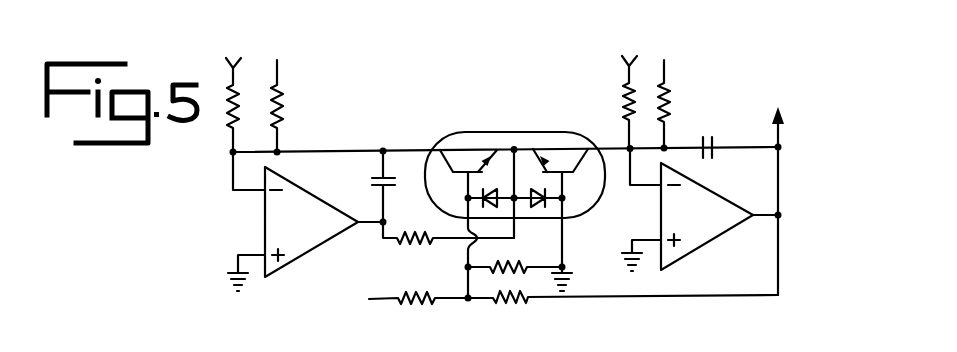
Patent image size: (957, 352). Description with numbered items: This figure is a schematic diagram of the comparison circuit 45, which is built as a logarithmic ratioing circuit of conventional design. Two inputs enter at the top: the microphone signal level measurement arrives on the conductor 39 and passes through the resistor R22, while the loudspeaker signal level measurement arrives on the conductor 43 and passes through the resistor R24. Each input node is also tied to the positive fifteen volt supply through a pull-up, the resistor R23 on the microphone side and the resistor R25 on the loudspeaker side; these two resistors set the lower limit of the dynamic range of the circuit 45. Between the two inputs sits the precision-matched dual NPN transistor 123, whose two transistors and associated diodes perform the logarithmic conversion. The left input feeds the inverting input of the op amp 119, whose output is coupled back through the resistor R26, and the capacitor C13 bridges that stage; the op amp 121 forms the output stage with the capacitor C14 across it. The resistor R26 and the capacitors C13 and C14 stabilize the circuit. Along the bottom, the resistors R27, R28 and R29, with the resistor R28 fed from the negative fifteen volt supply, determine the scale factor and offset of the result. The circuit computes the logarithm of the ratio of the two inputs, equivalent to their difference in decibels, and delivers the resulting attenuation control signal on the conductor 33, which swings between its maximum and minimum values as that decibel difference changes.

The conductor 39 is at (233, 74).
The conductor 43 is at (626, 67).
The comparison circuit 45 is at (439, 95).
The precision-matched dual NPN transistor 123 is at (500, 132).
The op amp 119 is at (305, 255).
The op amp 121 is at (725, 233).
The conductor 33 is at (781, 130).
The resistor R22 is at (216, 118).
The resistor R23 is at (295, 95).
The resistor R24 is at (605, 116).
The resistor R25 is at (682, 94).
The resistor R26 is at (448, 249).
The resistor R27 is at (515, 278).
The resistor R28 is at (393, 312).
The resistor R29 is at (623, 312).
The capacitor C13 is at (361, 186).
The capacitor C14 is at (721, 157).